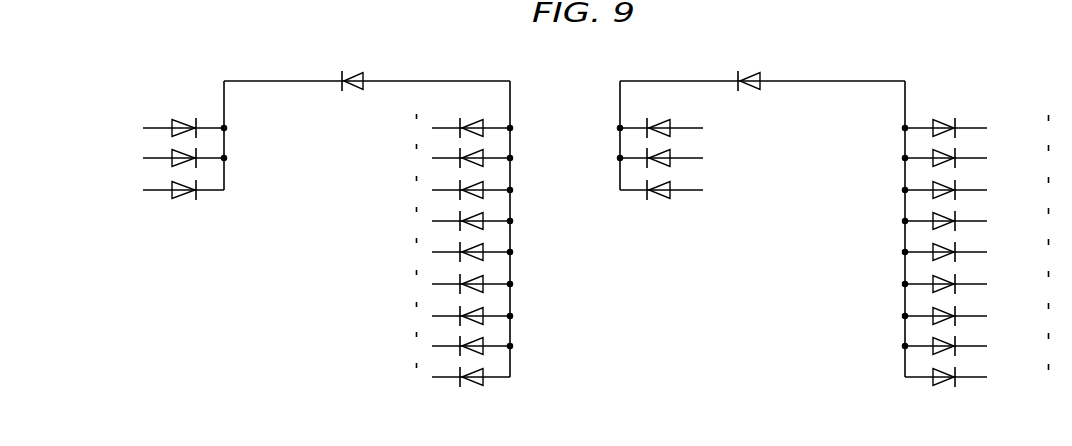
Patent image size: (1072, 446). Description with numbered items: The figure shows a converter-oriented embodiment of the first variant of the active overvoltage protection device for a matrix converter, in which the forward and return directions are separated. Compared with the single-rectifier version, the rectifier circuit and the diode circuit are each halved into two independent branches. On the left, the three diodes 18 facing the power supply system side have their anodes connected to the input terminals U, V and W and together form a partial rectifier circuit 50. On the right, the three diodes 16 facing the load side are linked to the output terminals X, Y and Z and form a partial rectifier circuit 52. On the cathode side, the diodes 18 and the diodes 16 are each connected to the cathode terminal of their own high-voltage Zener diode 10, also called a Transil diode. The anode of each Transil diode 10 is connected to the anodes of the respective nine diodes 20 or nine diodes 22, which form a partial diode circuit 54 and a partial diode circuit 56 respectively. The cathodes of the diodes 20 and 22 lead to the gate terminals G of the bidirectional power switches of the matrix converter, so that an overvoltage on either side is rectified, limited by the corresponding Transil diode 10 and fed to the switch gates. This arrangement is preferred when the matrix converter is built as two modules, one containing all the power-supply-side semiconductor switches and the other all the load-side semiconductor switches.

The high-voltage Zener diode 10 is at (345, 72).
The diodes facing the load side 16 is at (674, 175).
The diodes facing the power supply system side 18 is at (170, 176).
The diodes 20 is at (439, 266).
The diodes 22 is at (977, 265).
The partial rectifier circuit 50 is at (207, 146).
The partial rectifier circuit 52 is at (637, 146).
The partial diode circuit 54 is at (493, 299).
The partial diode circuit 56 is at (927, 270).